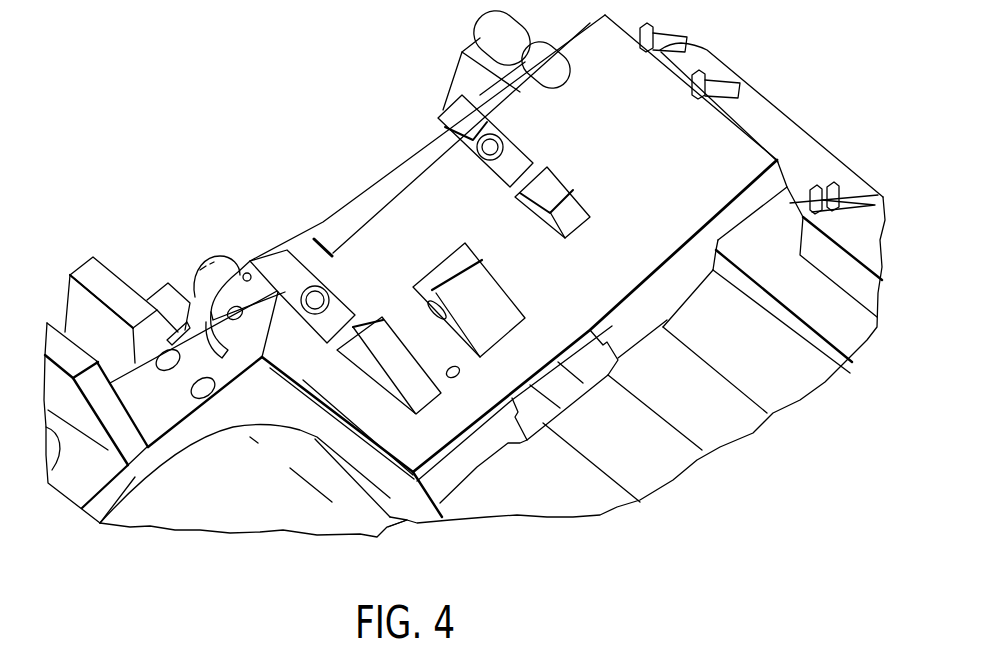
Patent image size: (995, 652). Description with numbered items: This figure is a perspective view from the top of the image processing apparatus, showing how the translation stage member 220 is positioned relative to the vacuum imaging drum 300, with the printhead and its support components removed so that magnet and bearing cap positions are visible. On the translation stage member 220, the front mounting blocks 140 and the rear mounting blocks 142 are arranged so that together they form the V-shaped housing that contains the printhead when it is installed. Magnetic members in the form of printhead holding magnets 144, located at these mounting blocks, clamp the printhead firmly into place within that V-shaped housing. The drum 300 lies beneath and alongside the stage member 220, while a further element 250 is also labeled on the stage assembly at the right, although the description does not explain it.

The front mounting blocks 140 is at (276, 262).
The rear mounting blocks 142 is at (455, 113).
The printhead holding magnets 144 is at (492, 146).
The translation stage member 220 is at (467, 458).
The frame bar 250 is at (705, 452).
The vacuum imaging drum 300 is at (205, 465).